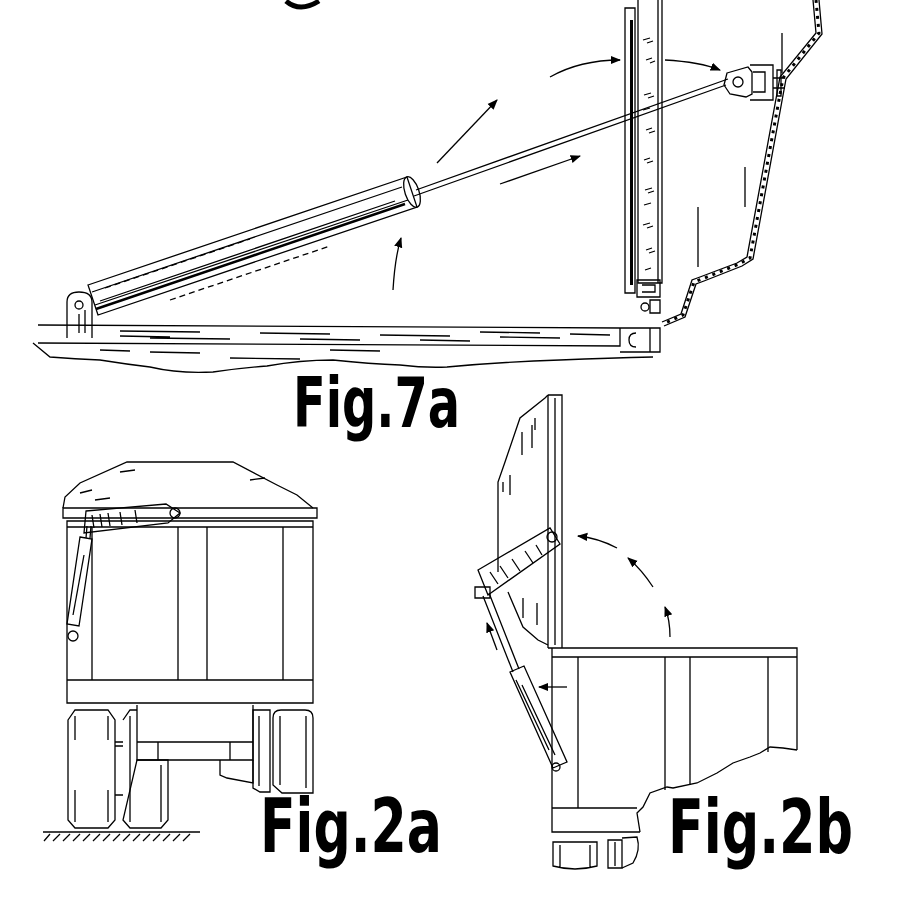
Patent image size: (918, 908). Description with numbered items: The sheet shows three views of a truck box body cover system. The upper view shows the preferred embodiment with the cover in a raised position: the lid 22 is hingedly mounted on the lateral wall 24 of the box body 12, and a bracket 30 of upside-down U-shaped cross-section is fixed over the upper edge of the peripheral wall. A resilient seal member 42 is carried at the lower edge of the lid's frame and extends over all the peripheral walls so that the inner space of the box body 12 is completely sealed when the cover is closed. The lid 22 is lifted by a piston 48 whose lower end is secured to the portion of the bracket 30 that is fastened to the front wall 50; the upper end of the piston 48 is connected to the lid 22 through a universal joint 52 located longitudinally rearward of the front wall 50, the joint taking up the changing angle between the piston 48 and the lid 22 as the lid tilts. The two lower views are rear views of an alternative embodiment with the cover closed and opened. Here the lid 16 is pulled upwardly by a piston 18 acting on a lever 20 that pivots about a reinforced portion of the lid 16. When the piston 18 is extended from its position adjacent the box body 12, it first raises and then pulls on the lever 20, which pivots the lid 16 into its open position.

In FIG. 2A, the box body 12 is at (260, 590).
In FIG. 2B, the box body 12 is at (621, 740).
In FIG. 2A, the lid 16 is at (150, 482).
In FIG. 2B, the lid 16 is at (513, 522).
In FIG. 2A, the piston 18 is at (66, 552).
In FIG. 2B, the piston 18 is at (543, 717).
In FIG. 2A, the lever 20 is at (122, 500).
In FIG. 2B, the lever 20 is at (480, 581).
In FIG. 7A, the lid 22 is at (771, 213).
In FIG. 7A, the lateral wall 24 is at (620, 328).
In FIG. 7A, the bracket 30 is at (372, 334).
In FIG. 7A, the resilient seal member 42 is at (624, 273).
In FIG. 7A, the piston 48 is at (328, 218).
In FIG. 7A, the front wall 50 is at (212, 353).
In FIG. 7A, the universal joint 52 is at (753, 66).